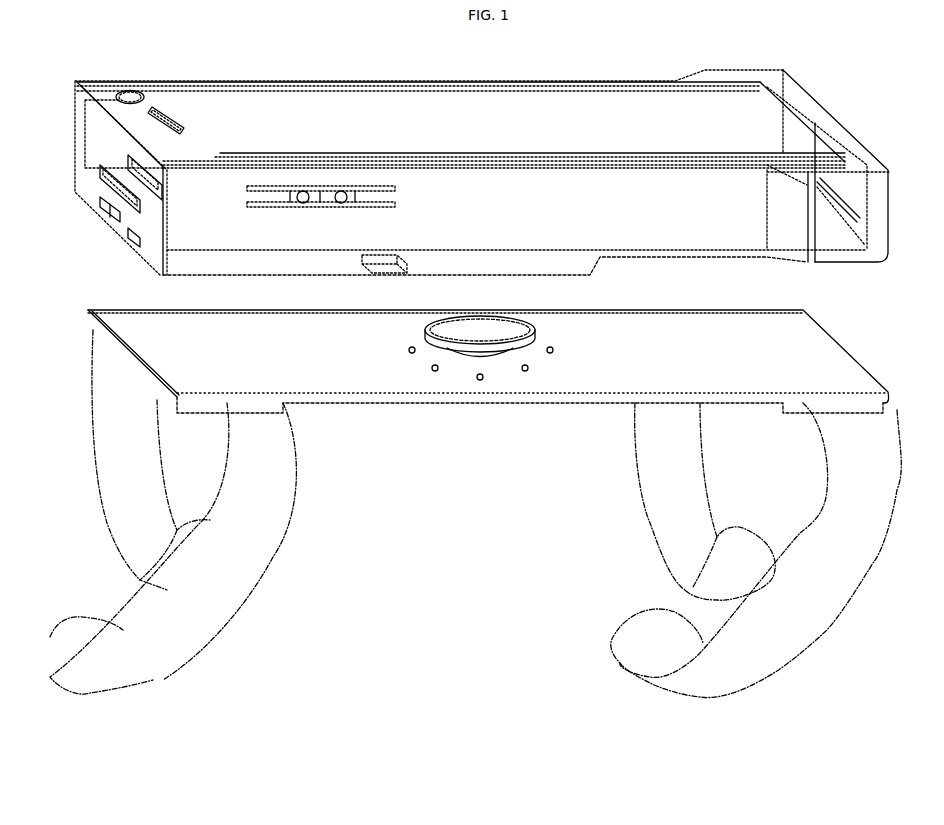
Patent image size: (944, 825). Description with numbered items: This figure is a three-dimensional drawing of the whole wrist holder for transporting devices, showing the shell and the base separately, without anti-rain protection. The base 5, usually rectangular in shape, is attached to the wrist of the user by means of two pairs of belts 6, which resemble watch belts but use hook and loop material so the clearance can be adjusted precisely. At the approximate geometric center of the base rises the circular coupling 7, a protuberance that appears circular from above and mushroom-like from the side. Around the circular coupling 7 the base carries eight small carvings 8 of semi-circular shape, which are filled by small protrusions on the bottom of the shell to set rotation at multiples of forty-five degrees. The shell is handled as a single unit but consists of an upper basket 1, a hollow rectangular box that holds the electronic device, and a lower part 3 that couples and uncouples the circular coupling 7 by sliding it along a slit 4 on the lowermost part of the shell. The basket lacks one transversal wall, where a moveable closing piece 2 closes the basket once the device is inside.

The basket 1 is at (532, 153).
The closing piece 2 is at (818, 98).
The lower part 3 is at (163, 274).
The slit 4 is at (120, 220).
The base 5 is at (628, 325).
The belts 6 is at (252, 483).
The circular coupling 7 is at (457, 312).
The small carvings 8 is at (467, 380).